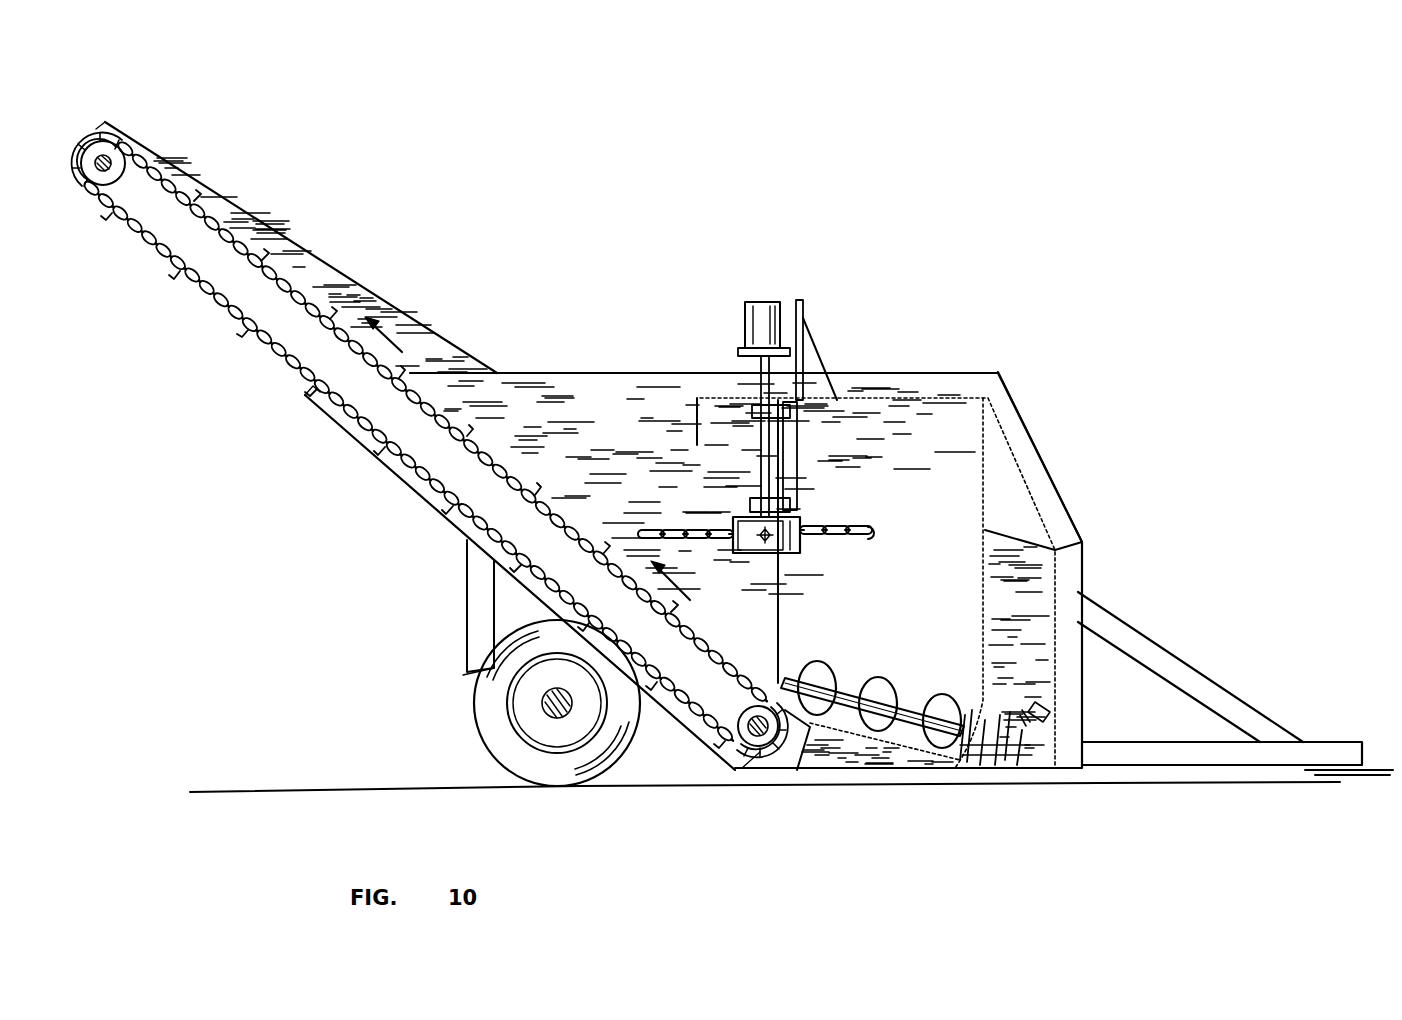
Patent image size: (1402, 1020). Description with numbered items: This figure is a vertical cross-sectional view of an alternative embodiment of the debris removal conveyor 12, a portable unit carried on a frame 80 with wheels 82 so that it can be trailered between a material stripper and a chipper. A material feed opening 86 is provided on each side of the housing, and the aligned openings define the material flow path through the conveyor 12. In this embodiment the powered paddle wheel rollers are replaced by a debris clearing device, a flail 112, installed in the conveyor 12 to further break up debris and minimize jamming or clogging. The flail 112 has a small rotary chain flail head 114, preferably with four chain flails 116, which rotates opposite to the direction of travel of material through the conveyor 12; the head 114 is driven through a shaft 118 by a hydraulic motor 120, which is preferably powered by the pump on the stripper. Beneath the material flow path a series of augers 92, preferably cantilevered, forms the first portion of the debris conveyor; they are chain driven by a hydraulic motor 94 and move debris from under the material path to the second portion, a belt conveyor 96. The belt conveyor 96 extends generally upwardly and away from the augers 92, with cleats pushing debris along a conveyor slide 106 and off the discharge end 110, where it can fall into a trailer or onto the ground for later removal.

The debris removal conveyor 12 is at (787, 154).
The frame 80 is at (598, 373).
The wheels 82 is at (490, 713).
The material feed opening 86 is at (948, 423).
The augers 92 is at (870, 700).
The hydraulic motor 94 is at (1050, 708).
The belt conveyor 96 is at (430, 307).
The conveyor slide 106 is at (562, 500).
The discharge end 110 is at (68, 130).
The flail 112 is at (814, 452).
The rotary chain flail head 114 is at (806, 564).
The chain flails 116 is at (840, 522).
The shaft 118 is at (760, 482).
The hydraulic motor 120 is at (763, 312).